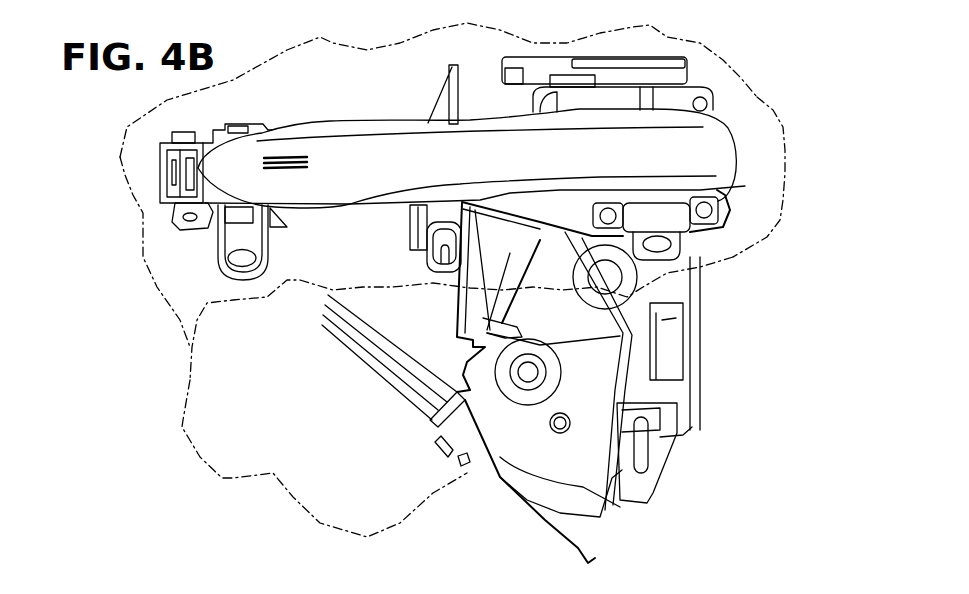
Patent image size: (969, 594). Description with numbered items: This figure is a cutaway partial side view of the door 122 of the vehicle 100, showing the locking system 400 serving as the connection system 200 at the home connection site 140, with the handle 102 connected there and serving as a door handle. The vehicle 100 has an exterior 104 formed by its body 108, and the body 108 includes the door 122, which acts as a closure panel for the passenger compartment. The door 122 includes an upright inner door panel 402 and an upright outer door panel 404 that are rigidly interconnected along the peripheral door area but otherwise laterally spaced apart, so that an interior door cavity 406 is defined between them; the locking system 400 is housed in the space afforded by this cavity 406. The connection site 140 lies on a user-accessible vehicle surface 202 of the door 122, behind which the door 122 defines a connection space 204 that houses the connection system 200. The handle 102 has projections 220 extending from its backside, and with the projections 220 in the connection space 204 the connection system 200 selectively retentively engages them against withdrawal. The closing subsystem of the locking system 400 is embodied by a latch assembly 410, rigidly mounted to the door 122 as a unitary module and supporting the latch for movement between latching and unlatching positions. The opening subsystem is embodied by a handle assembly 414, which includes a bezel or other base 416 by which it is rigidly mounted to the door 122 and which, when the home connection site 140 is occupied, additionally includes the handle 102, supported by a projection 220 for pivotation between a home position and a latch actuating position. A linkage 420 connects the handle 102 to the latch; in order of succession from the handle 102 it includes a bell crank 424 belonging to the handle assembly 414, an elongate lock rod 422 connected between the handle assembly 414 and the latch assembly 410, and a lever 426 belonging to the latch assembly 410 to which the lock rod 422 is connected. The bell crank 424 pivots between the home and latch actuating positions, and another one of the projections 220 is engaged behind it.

The vehicle 100 is at (707, 37).
The handle 102 is at (368, 123).
The exterior 104 is at (193, 265).
The body 108 is at (757, 97).
The door 122 is at (777, 113).
The connection site 140 is at (717, 100).
The connection system 200 is at (347, 215).
The vehicle surface 202 is at (207, 298).
The connection space 204 is at (358, 272).
The projection 220 is at (178, 130).
The locking system 400 is at (475, 195).
The inner door panel 402 is at (320, 500).
The outer door panel 404 is at (123, 153).
The interior door cavity 406 is at (512, 477).
The latch assembly 410 is at (660, 380).
The handle assembly 414 is at (730, 205).
The base 416 is at (720, 243).
The linkage 420 is at (642, 302).
The lock rod 422 is at (630, 350).
The bell crank 424 is at (523, 57).
The lever 426 is at (657, 405).